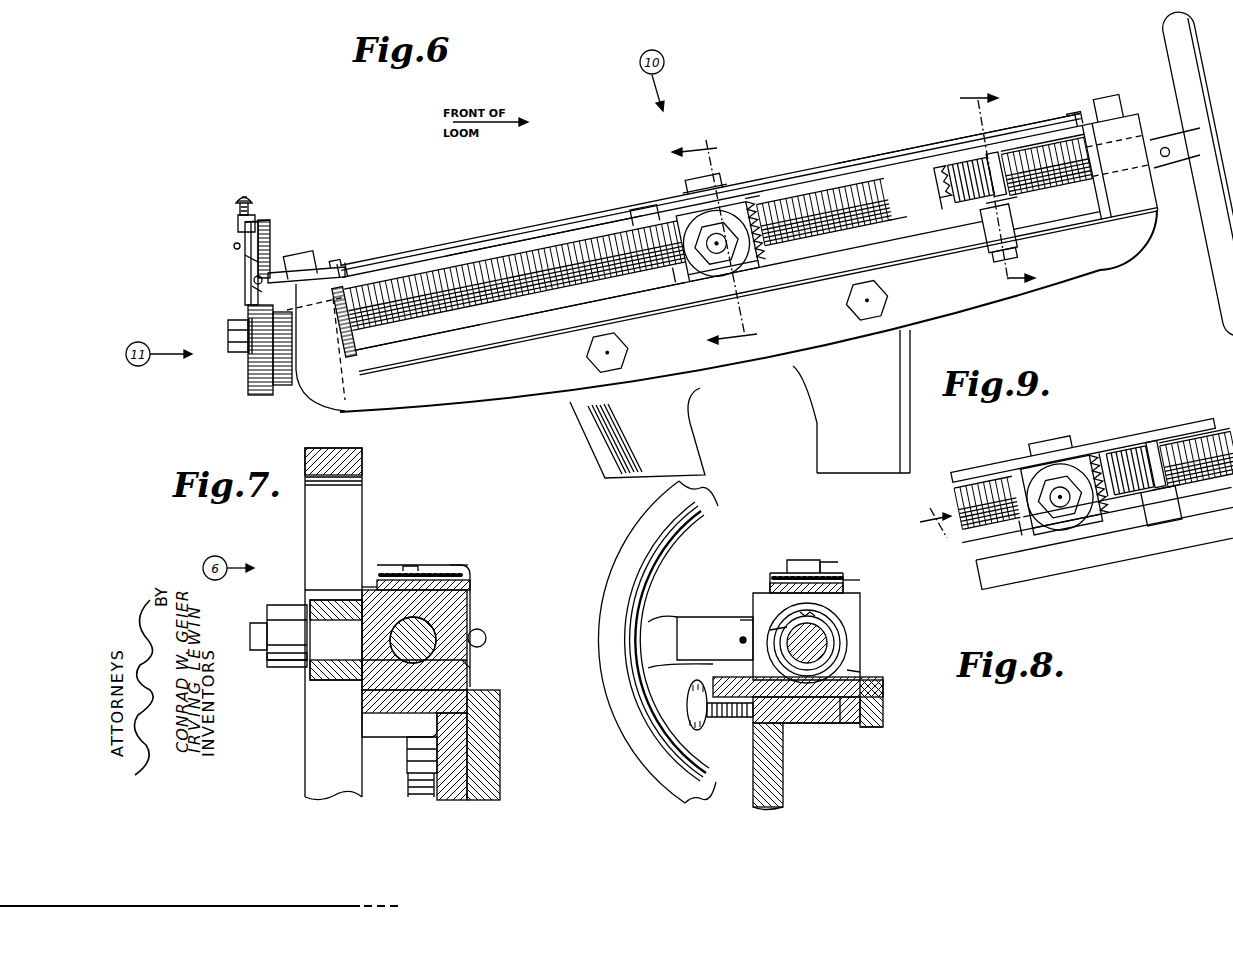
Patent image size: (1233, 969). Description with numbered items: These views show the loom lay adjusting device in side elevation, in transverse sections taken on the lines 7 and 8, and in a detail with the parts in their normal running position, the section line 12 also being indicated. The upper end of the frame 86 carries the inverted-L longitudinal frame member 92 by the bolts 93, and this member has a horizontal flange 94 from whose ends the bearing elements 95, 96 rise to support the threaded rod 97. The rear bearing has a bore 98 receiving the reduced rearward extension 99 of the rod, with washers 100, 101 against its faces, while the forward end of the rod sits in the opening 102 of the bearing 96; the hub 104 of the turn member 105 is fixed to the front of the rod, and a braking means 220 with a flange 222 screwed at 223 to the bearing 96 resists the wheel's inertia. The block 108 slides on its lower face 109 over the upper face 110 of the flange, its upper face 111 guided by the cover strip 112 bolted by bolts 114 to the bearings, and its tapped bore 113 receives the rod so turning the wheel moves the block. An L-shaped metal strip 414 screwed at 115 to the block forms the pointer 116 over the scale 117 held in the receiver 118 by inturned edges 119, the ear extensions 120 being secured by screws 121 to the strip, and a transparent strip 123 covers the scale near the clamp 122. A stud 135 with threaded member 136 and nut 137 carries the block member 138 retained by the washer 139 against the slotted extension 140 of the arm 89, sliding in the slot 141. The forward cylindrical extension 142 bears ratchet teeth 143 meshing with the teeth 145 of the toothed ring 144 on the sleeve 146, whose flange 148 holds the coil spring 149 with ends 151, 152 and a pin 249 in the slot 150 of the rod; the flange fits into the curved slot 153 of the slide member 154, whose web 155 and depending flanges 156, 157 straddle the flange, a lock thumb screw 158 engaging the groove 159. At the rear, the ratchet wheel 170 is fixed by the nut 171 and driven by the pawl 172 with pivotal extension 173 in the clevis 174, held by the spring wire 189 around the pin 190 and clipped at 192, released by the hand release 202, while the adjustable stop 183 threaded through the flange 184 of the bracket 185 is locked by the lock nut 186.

In FIG. 6, the section line 7— 7 is at (714, 244).
In FIG. 6, the section line 8— 8 is at (997, 187).
In FIG. 9, the section line 12 is at (920, 521).
In FIG. 6, the frame 86 is at (685, 438).
In FIG. 7, the frame 86 is at (484, 768).
In FIG. 7, the arm 89 is at (345, 773).
In FIG. 6, the longitudinal frame member 92 is at (503, 399).
In FIG. 7, the longitudinal frame member 92 is at (448, 704).
In FIG. 8, the longitudinal frame member 92 is at (757, 762).
In FIG. 9, the longitudinal frame member 92 is at (1077, 571).
In FIG. 6, the bolts 93 is at (597, 358).
In FIG. 7, the bolts 93 is at (427, 760).
In FIG. 6, the horizontal slide or flange 94 is at (517, 333).
In FIG. 7, the horizontal slide or flange 94 is at (360, 712).
In FIG. 8, the horizontal slide or flange 94 is at (798, 722).
In FIG. 6, the bearing element 95 is at (312, 392).
In FIG. 6, the bearing element 96 is at (1131, 202).
In FIG. 8, the bearing element 96 is at (851, 600).
In FIG. 6, the threaded rod 97 is at (464, 267).
In FIG. 7, the threaded rod 97 is at (392, 652).
In FIG. 8, the threaded rod 97 is at (800, 647).
In FIG. 9, the threaded rod 97 is at (997, 500).
In FIG. 6, the bore 98 is at (336, 414).
In FIG. 6, the rearward extension 99 is at (380, 259).
In FIG. 6, the washer 100 is at (348, 346).
In FIG. 6, the washer 101 is at (252, 358).
In FIG. 6, the opening 102 is at (1128, 132).
In FIG. 6, the hub 104 is at (1184, 182).
In FIG. 8, the turn member 105 is at (612, 681).
In FIG. 6, the block 108 is at (700, 270).
In FIG. 7, the block 108 is at (452, 606).
In FIG. 9, the block 108 is at (1040, 531).
In FIG. 6, the lower face 109 is at (772, 263).
In FIG. 7, the lower face 109 is at (392, 672).
In FIG. 9, the lower face 109 is at (1091, 528).
In FIG. 6, the upper face 110 is at (592, 284).
In FIG. 7, the upper face 110 is at (399, 714).
In FIG. 8, the upper face 110 is at (828, 718).
In FIG. 9, the upper face 110 is at (968, 546).
In FIG. 6, the upper face 111 is at (648, 208).
In FIG. 7, the upper face 111 is at (367, 587).
In FIG. 6, the cover strip 112 is at (579, 224).
In FIG. 7, the cover strip 112 is at (470, 577).
In FIG. 8, the cover strip 112 is at (846, 588).
In FIG. 9, the cover strip 112 is at (951, 474).
In FIG. 6, the tapped bore 113 is at (690, 276).
In FIG. 9, the tapped bore 113 is at (1038, 527).
In FIG. 6, the bolts 114 is at (316, 262).
In FIG. 7, the bolts 114 is at (452, 664).
In FIG. 8, the bolts 114 is at (829, 572).
In FIG. 7, the screw 115 is at (487, 638).
In FIG. 6, the pointer 116 is at (718, 192).
In FIG. 7, the pointer 116 is at (434, 567).
In FIG. 9, the pointer 116 is at (1044, 439).
In FIG. 7, the scale 117 is at (394, 572).
In FIG. 8, the scale 117 is at (790, 573).
In FIG. 6, the receiver 118 is at (862, 164).
In FIG. 7, the receiver 118 is at (472, 588).
In FIG. 8, the receiver 118 is at (770, 588).
In FIG. 7, the inturned edges 119 is at (468, 564).
In FIG. 8, the inturned edges 119 is at (775, 576).
In FIG. 6, the ear extensions 120 is at (326, 279).
In FIG. 6, the screws 121 is at (338, 264).
In FIG. 6, the clamp plate 122 is at (702, 181).
In FIG. 7, the transparent strip 123 is at (409, 568).
In FIG. 8, the transparent strip 123 is at (801, 560).
In FIG. 7, the cylindrical stud extension 135 is at (336, 649).
In FIG. 6, the threaded member 136 is at (728, 232).
In FIG. 7, the threaded member 136 is at (256, 638).
In FIG. 9, the threaded member 136 is at (1062, 517).
In FIG. 6, the nut 137 is at (712, 262).
In FIG. 7, the nut 137 is at (273, 609).
In FIG. 9, the nut 137 is at (1059, 509).
In FIG. 7, the block member 138 is at (347, 600).
In FIG. 6, the washer 139 is at (740, 262).
In FIG. 7, the washer 139 is at (303, 588).
In FIG. 9, the washer 139 is at (1040, 470).
In FIG. 7, the slotted extension 140 is at (364, 451).
In FIG. 7, the slot 141 is at (364, 480).
In FIG. 6, the cylindrical extension 142 is at (768, 248).
In FIG. 9, the cylindrical extension 142 is at (1093, 458).
In FIG. 6, the ratchet-like teeth 143 is at (765, 228).
In FIG. 6, the toothed ring member 144 is at (946, 160).
In FIG. 9, the toothed ring member 144 is at (1113, 456).
In FIG. 6, the teeth 145 is at (938, 172).
In FIG. 6, the sleeve 146 is at (1008, 201).
In FIG. 8, the sleeve 146 is at (813, 614).
In FIG. 9, the sleeve 146 is at (1164, 494).
In FIG. 6, the flange 148 is at (994, 155).
In FIG. 8, the flange 148 is at (843, 653).
In FIG. 9, the flange 148 is at (1155, 452).
In FIG. 6, the coil spring 149 is at (969, 162).
In FIG. 8, the coil spring 149 is at (787, 627).
In FIG. 9, the coil spring 149 is at (1124, 460).
In FIG. 6, the slot 150 is at (1045, 223).
In FIG. 8, the slot 150 is at (828, 623).
In FIG. 6, the spring end 151 is at (938, 208).
In FIG. 9, the spring end 151 is at (1124, 538).
In FIG. 6, the spring end 152 is at (1004, 180).
In FIG. 8, the spring end 152 is at (848, 670).
In FIG. 9, the spring end 152 is at (1167, 461).
In FIG. 8, the curved slot 153 is at (847, 722).
In FIG. 9, the curved slot 153 is at (1162, 548).
In FIG. 6, the slide member 154 is at (1003, 255).
In FIG. 8, the slide member 154 is at (883, 714).
In FIG. 8, the central web member 155 is at (714, 678).
In FIG. 6, the depending flange 156 is at (1012, 241).
In FIG. 8, the depending flange 156 is at (874, 728).
In FIG. 8, the depending flange 157 is at (718, 719).
In FIG. 8, the lock thumb screw 158 is at (688, 712).
In FIG. 8, the groove 159 is at (776, 746).
In FIG. 6, the ratchet wheel 170 is at (272, 396).
In FIG. 6, the nut 171 is at (240, 360).
In FIG. 6, the pawl 172 is at (272, 240).
In FIG. 6, the pivotal extension 173 is at (238, 228).
In FIG. 6, the clevis 174 is at (266, 220).
In FIG. 6, the adjustable stop 183 is at (248, 196).
In FIG. 6, the flange 184 is at (238, 210).
In FIG. 6, the bracket member 185 is at (285, 268).
In FIG. 6, the lock nut 186 is at (270, 219).
In FIG. 6, the spring wire 189 is at (245, 258).
In FIG. 6, the pin 190 is at (234, 246).
In FIG. 6, the clip point 192 is at (250, 288).
In FIG. 6, the hand release 202 is at (254, 282).
In FIG. 8, the braking means 220 is at (687, 616).
In FIG. 8, the flange 222 is at (744, 621).
In FIG. 8, the screw connection 223 is at (741, 639).
In FIG. 8, the pin 249 is at (824, 640).
In FIG. 7, the L-shaped metal strip 414 is at (455, 567).